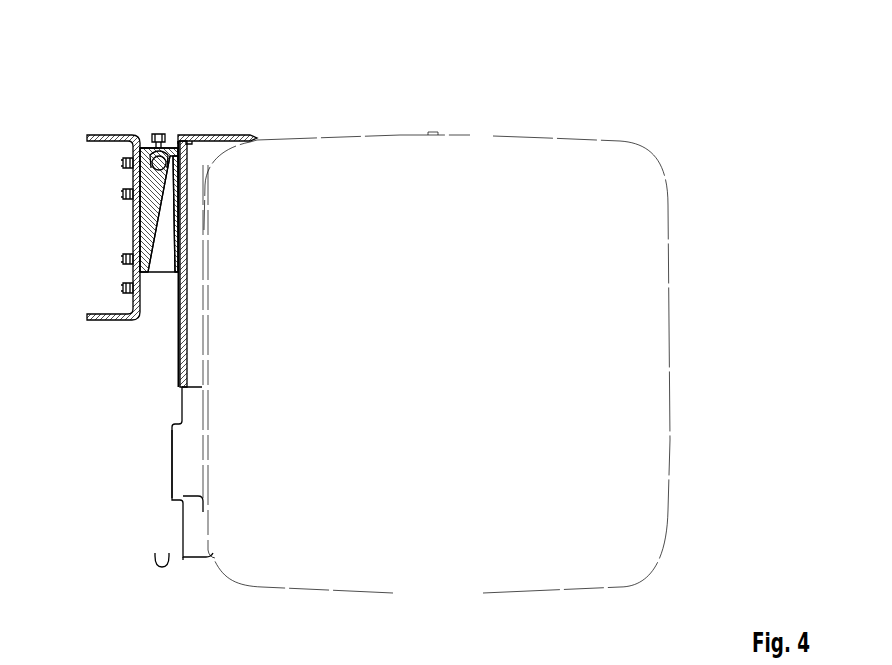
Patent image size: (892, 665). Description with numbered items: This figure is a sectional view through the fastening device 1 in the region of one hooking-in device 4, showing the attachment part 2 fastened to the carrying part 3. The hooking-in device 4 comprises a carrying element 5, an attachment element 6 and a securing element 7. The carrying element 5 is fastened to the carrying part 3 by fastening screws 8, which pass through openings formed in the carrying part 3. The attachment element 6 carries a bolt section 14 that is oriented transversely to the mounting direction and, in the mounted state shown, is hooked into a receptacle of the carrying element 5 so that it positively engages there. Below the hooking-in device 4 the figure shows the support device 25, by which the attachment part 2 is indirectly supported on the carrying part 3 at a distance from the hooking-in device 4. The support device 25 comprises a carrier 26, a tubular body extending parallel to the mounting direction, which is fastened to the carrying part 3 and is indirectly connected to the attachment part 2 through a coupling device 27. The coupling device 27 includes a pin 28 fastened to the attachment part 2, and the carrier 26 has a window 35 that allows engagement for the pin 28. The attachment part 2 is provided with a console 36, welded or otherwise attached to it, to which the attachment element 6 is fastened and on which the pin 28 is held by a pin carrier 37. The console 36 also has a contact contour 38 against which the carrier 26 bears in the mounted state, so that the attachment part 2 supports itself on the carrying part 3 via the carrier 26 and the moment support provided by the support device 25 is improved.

The fastening device 1 is at (153, 102).
The attachment part 2 is at (552, 132).
The carrying part 3 is at (102, 124).
The hooking-in device 4 is at (178, 113).
The carrying element 5 is at (138, 214).
The attachment element 6 is at (181, 214).
The securing element 7 is at (147, 147).
The fastening screws 8 is at (122, 194).
The bolt section 14 is at (162, 164).
The support device 25 is at (124, 488).
The carrier 26 is at (158, 357).
The coupling device 27 is at (176, 588).
The pin 28 is at (156, 566).
The window 35 is at (170, 468).
The console 36 is at (222, 122).
The pin carrier 37 is at (195, 496).
The contact contour 38 is at (188, 294).